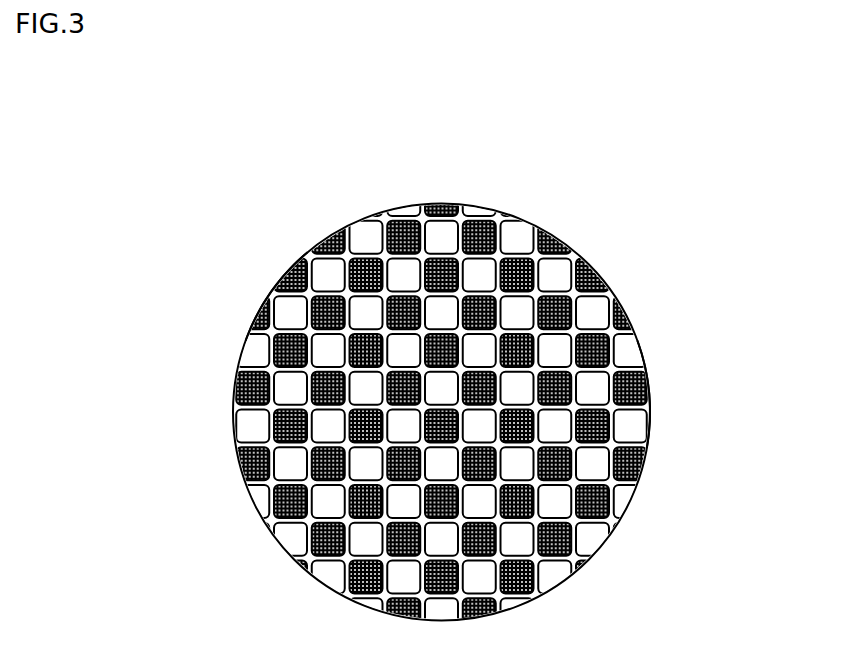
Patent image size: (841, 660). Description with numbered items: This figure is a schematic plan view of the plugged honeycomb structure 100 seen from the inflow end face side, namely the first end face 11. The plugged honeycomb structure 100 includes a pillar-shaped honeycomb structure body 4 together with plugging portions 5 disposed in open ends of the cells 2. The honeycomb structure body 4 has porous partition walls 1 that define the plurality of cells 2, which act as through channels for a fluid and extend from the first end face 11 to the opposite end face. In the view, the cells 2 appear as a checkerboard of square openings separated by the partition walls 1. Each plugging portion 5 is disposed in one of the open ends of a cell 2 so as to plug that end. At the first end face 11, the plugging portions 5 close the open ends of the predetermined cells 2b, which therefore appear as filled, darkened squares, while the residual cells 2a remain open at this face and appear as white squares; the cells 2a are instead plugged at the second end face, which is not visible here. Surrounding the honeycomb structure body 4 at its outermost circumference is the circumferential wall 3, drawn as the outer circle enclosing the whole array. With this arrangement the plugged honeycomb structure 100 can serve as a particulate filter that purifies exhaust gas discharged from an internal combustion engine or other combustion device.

The plugged honeycomb structure 100 is at (758, 84).
The porous partition walls 1 is at (463, 226).
The cells 2 is at (561, 235).
The residual cells 2a is at (480, 280).
The predetermined cells 2b is at (483, 310).
The circumferential wall 3 is at (618, 301).
The honeycomb structure body 4 is at (650, 398).
The plugging portions 5 is at (398, 219).
The first end face 11 is at (292, 268).